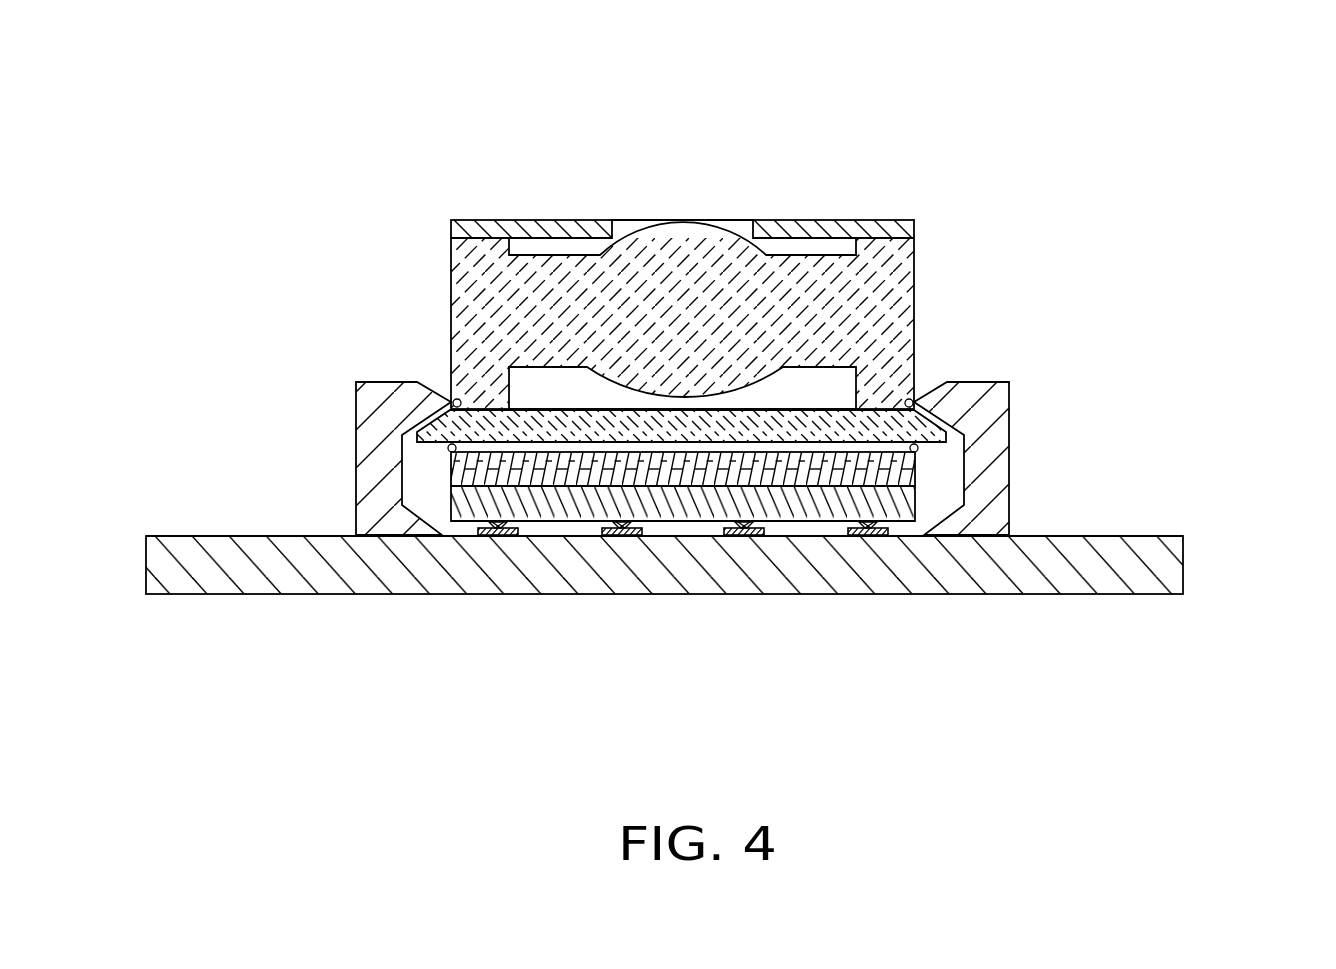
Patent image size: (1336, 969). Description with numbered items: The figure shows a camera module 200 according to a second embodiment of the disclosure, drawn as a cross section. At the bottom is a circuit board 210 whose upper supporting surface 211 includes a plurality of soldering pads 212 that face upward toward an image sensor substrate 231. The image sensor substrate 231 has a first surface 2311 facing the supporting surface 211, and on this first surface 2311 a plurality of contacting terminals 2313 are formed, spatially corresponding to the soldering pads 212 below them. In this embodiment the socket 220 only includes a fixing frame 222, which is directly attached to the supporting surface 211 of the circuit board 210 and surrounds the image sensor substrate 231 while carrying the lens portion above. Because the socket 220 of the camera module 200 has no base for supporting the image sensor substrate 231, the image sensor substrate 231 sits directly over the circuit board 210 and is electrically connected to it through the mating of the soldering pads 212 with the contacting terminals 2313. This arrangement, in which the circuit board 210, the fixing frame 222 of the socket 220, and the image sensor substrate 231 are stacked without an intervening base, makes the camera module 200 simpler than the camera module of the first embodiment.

The camera module 200 is at (910, 83).
The circuit board 210 is at (1155, 563).
The supporting surface 211 is at (1134, 536).
The soldering pads 212 is at (740, 528).
The socket 220 is at (1045, 360).
The fixing frame 222 is at (988, 448).
The image sensor substrate 231 is at (573, 508).
The first surface 2311 is at (803, 522).
The contacting terminals 2313 is at (870, 530).